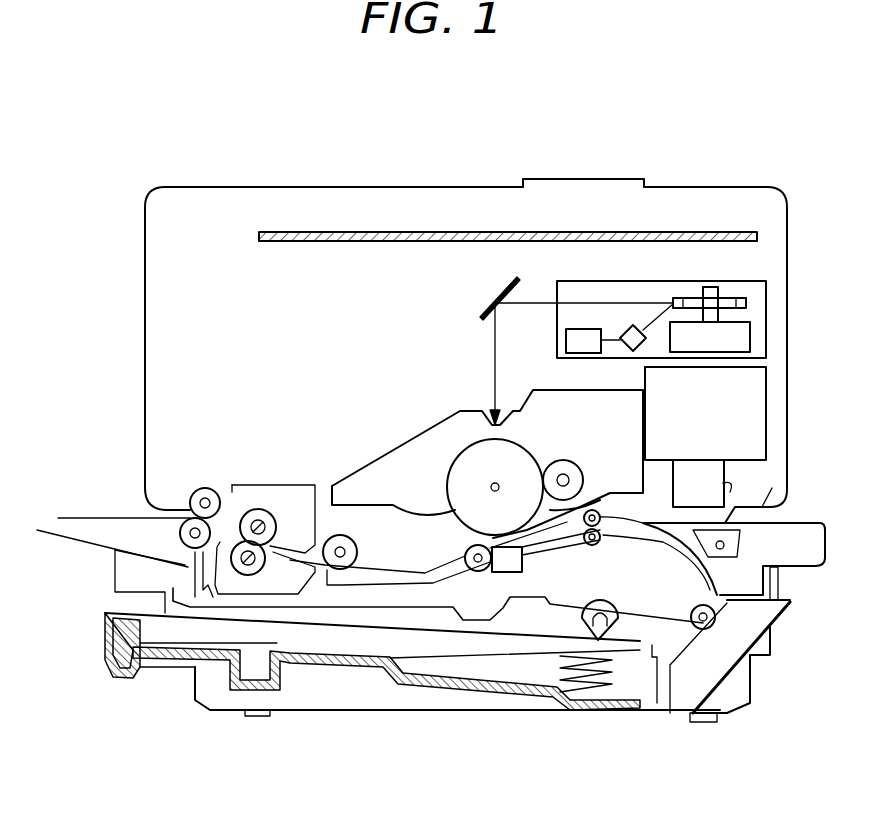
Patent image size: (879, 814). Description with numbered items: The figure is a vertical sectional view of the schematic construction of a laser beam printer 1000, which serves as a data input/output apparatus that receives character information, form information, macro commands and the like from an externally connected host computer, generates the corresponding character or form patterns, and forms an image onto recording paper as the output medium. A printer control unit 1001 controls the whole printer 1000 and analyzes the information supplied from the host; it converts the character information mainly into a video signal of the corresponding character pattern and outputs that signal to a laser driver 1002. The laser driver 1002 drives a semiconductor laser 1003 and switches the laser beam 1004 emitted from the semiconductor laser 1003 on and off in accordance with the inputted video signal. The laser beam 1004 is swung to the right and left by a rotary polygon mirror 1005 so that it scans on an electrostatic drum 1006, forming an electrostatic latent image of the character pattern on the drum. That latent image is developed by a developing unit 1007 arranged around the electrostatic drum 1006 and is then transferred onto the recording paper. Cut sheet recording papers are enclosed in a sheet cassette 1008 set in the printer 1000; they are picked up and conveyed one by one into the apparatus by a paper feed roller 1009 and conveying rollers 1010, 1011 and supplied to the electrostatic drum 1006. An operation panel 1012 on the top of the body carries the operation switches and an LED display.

The laser beam printer 1000 is at (710, 187).
The printer control unit 1001 is at (459, 232).
The laser driver 1002 is at (565, 340).
The semiconductor laser 1003 is at (641, 346).
The laser beam 1004 is at (613, 303).
The rotary polygon mirror 1005 is at (747, 293).
The electrostatic drum 1006 is at (470, 455).
The developing unit 1007 is at (378, 470).
The sheet cassette 1008 is at (105, 630).
The paper feed roller 1009 is at (582, 603).
The conveying roller 1010 is at (715, 620).
The conveying roller 1011 is at (600, 545).
The operation panel 1012 is at (607, 180).